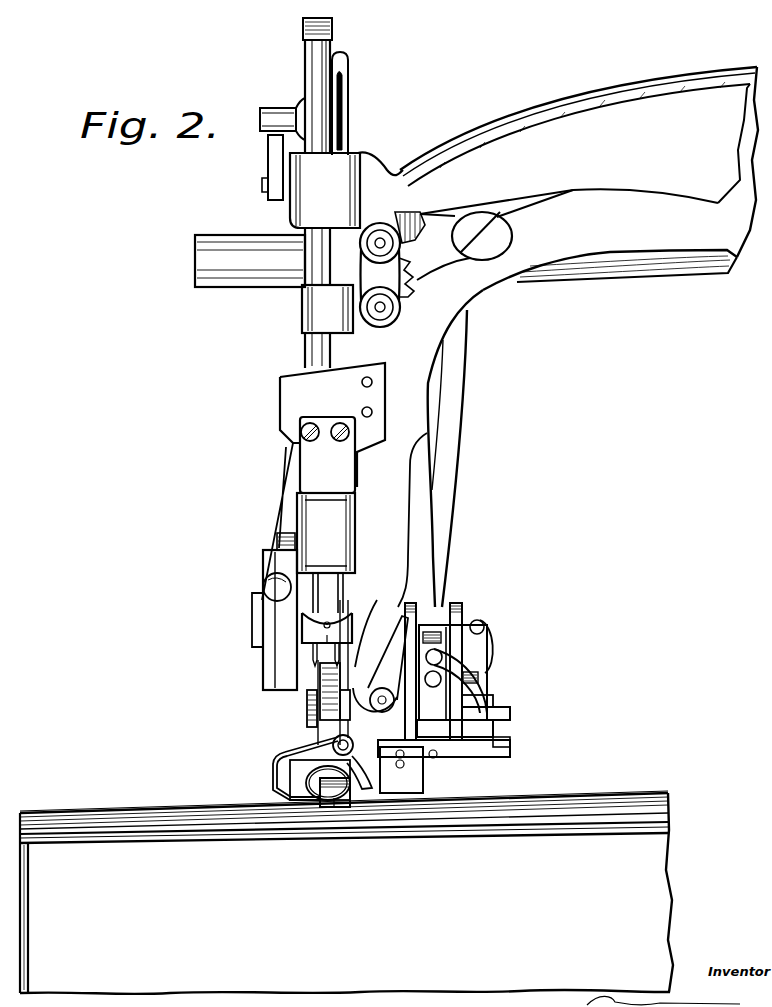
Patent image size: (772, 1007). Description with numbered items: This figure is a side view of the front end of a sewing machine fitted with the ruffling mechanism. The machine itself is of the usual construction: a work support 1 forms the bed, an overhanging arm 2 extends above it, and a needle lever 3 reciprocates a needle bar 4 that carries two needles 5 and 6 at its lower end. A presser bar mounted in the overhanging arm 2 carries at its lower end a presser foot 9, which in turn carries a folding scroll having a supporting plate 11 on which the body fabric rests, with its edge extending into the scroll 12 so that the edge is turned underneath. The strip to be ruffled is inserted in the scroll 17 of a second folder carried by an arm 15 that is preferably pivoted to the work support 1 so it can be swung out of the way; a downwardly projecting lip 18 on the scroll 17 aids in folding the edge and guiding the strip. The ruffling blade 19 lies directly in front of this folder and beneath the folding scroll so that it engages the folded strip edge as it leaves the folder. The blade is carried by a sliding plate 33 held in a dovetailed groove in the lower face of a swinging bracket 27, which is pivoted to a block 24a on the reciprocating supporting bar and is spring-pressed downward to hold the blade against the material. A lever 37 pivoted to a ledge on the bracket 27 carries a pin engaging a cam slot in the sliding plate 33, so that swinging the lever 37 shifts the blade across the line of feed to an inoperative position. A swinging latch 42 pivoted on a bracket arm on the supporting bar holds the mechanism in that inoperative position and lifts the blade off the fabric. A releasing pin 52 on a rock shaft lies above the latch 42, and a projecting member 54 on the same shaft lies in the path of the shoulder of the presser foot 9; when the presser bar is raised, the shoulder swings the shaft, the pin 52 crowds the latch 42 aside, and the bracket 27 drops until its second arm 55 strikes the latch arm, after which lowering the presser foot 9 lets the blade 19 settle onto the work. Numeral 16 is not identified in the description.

The work support 1 is at (584, 820).
The overhanging arm 2 is at (592, 245).
The needle lever 3 is at (579, 162).
The needle bar 4 is at (313, 350).
The needle 5 is at (313, 680).
The needle 6 is at (344, 724).
The presser foot 9 is at (307, 708).
The supporting plate 11 is at (307, 744).
The scroll 12 is at (366, 767).
The arm 15 is at (560, 795).
The bracket base clamp 16 is at (390, 795).
The scroll 17 is at (300, 780).
The downwardly projecting lip 18 is at (332, 790).
The ruffling blade 19 is at (410, 783).
The block 24a is at (455, 682).
The swinging bracket 27 is at (480, 732).
The sliding plate 33 is at (510, 750).
The lever 37 is at (487, 694).
The swinging latch 42 is at (480, 660).
The releasing pin 52 is at (484, 624).
The projecting member 54 is at (390, 572).
The second arm 55 is at (388, 713).